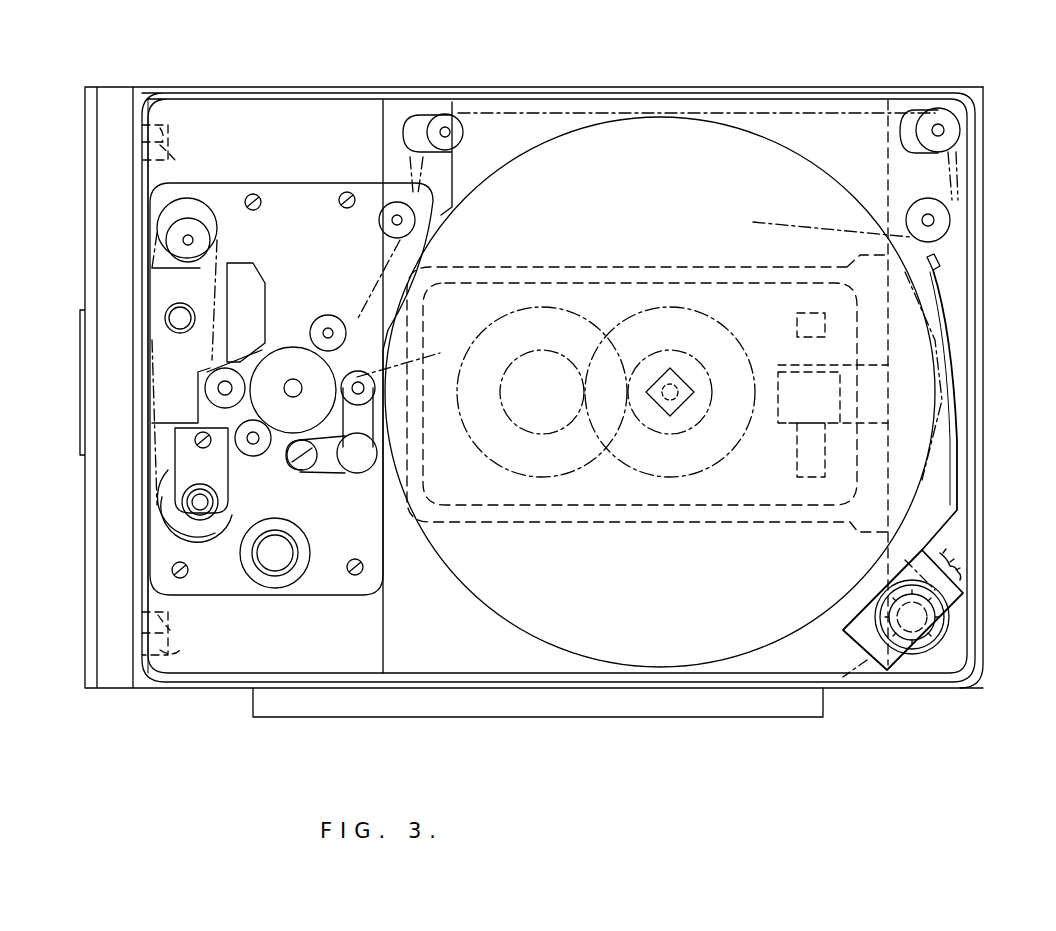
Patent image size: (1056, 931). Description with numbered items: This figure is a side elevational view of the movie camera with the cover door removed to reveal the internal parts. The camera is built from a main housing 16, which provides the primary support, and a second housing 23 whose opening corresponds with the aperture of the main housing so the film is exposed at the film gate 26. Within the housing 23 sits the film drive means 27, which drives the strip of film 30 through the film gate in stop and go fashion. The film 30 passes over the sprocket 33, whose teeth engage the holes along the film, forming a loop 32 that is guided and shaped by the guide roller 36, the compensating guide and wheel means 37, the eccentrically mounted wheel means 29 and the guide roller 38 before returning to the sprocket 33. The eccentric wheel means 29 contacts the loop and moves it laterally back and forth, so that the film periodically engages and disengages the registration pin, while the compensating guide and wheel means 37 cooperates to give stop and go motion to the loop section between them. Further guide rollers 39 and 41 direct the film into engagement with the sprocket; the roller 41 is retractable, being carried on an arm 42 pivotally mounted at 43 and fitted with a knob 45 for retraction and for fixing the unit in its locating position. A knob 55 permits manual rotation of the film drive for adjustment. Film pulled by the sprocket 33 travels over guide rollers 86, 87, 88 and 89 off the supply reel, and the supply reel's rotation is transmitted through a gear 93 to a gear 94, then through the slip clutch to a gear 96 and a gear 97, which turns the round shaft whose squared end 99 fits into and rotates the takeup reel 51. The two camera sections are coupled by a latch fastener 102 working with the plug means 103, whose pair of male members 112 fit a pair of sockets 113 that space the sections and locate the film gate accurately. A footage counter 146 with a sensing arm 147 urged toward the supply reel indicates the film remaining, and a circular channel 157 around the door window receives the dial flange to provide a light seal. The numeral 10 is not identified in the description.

The motor mount assembly 10 is at (955, 583).
The main housing 16 is at (124, 68).
The housing 23 is at (396, 90).
The film gate 26 is at (128, 336).
The film drive means 27 is at (295, 302).
The eccentrically mounted wheel means 29 is at (216, 537).
The strip of film 30 is at (452, 343).
The loop 32 is at (230, 492).
The sprocket 33 is at (293, 390).
The guide roller 36 is at (205, 386).
The compensating guide and wheel means 37 is at (214, 240).
The guide roller 38 is at (250, 456).
The guide roller 39 is at (330, 316).
The guide roller 41 is at (359, 370).
The arm 42 is at (323, 474).
The pivot 43 is at (300, 472).
The knob 45 is at (360, 473).
The takeup reel 51 is at (682, 588).
The knob 55 is at (298, 556).
The guide roller 86 is at (379, 224).
The guide roller 87 is at (462, 142).
The guide roller 88 is at (915, 130).
The guide roller 89 is at (926, 200).
The gear 93 is at (718, 463).
The gear 94 is at (520, 426).
The gear 96 is at (505, 465).
The gear 97 is at (664, 430).
The squared end 99 is at (678, 378).
The latch fastener 102 is at (787, 358).
The plug means 103 is at (170, 138).
The male members 112 is at (178, 162).
The sockets 113 is at (172, 123).
The footage counter 146 is at (940, 618).
The sensing arm 147 is at (934, 268).
The circular channel 157 is at (913, 645).